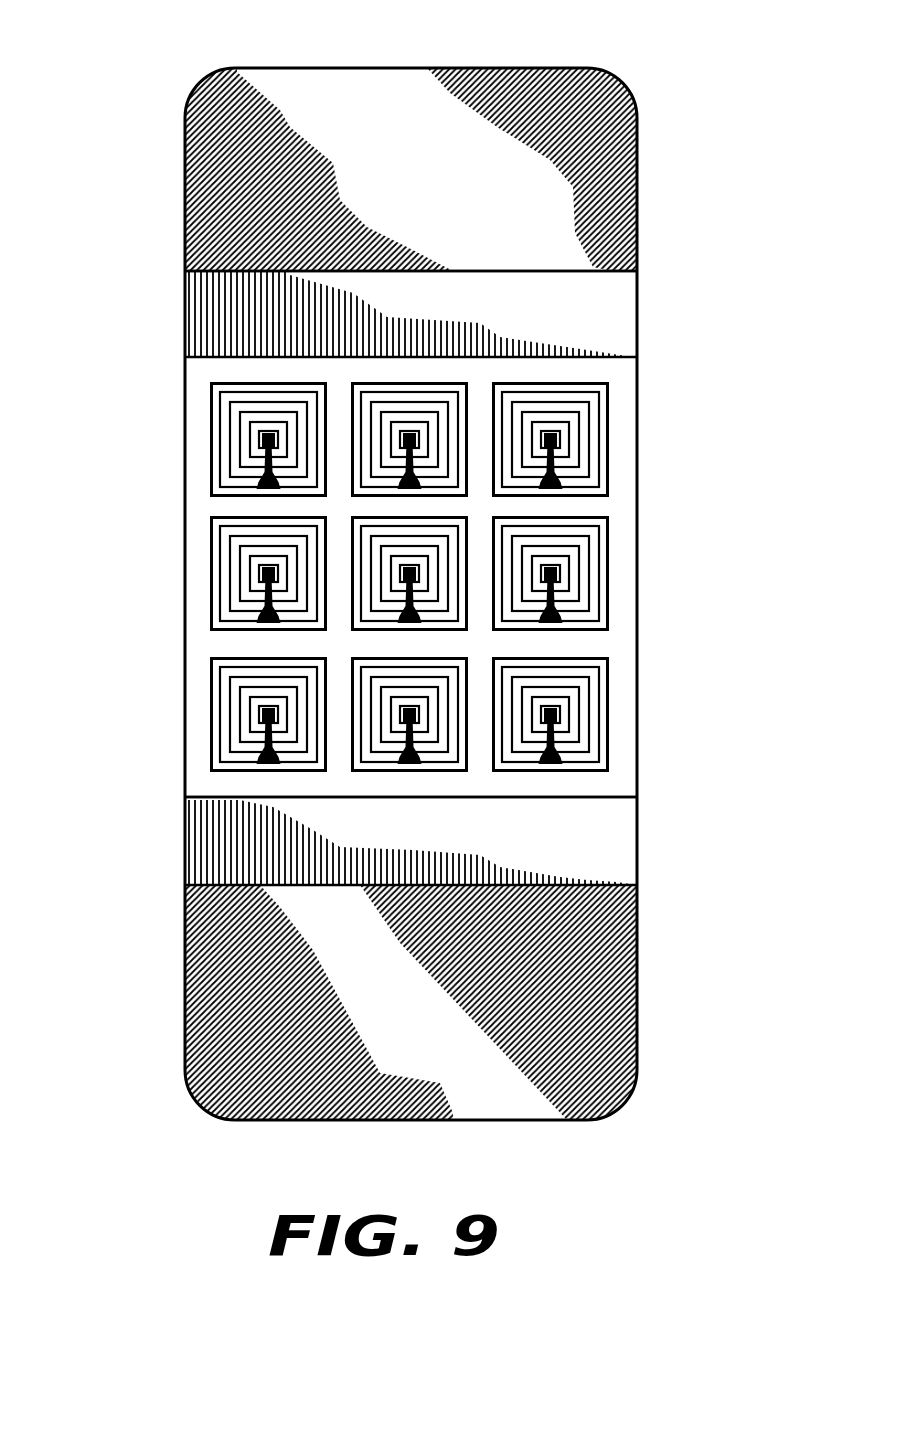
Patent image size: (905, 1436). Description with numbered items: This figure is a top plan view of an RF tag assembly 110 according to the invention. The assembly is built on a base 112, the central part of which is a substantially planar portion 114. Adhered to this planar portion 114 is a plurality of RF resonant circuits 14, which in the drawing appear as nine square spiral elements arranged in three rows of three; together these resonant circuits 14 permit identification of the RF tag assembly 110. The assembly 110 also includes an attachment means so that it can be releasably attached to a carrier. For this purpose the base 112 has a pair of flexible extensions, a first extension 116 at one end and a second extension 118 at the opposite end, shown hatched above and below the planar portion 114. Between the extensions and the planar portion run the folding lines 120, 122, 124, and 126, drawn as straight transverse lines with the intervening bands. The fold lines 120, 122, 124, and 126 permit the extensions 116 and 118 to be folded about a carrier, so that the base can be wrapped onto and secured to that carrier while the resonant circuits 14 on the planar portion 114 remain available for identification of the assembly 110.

The RF tag assembly 110 is at (62, 26).
The base 112 is at (637, 592).
The substantially planar portion 114 is at (163, 358).
The resonant circuits 14 is at (262, 383).
The first extension 116 is at (185, 170).
The second extension 118 is at (185, 950).
The folding line 120 is at (593, 347).
The folding line 122 is at (593, 270).
The folding line 124 is at (577, 797).
The folding line 126 is at (580, 888).